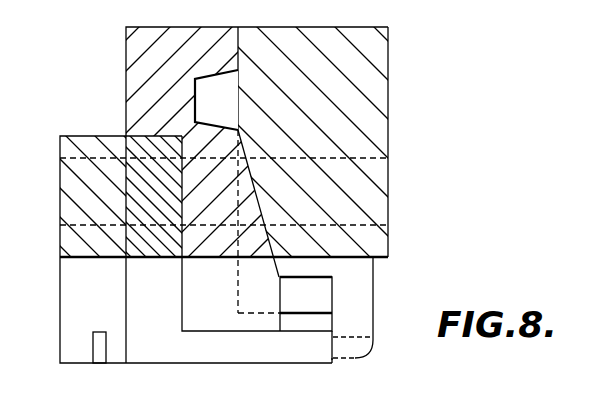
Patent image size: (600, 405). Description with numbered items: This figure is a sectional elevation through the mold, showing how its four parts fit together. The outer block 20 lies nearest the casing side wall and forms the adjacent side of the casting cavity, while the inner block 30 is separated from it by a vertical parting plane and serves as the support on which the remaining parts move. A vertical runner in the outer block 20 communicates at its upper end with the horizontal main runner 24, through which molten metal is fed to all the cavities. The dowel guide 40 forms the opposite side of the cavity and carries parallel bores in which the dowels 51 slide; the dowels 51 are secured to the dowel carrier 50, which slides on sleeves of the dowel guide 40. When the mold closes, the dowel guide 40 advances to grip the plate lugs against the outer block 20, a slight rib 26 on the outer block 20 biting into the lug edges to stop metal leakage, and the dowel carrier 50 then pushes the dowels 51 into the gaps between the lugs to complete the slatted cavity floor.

The outer block 20 is at (377, 200).
The horizontal main runner 24 is at (210, 96).
The rib 26 is at (329, 349).
The inner block 30 is at (126, 73).
The dowel guide 40 is at (136, 280).
The dowel carrier 50 is at (75, 302).
The dowel 51 is at (364, 332).